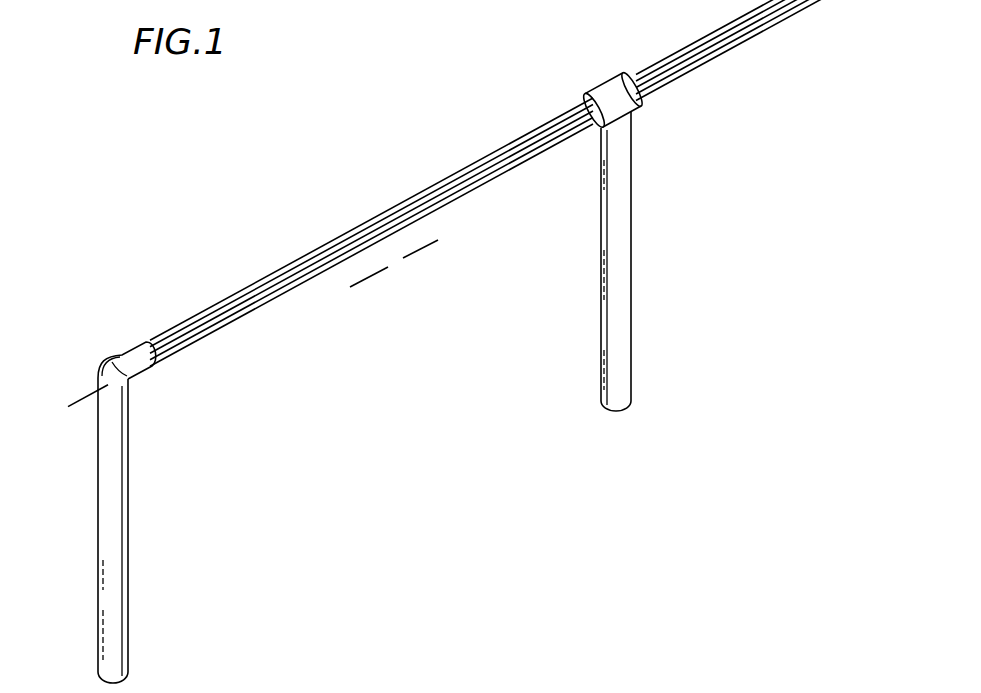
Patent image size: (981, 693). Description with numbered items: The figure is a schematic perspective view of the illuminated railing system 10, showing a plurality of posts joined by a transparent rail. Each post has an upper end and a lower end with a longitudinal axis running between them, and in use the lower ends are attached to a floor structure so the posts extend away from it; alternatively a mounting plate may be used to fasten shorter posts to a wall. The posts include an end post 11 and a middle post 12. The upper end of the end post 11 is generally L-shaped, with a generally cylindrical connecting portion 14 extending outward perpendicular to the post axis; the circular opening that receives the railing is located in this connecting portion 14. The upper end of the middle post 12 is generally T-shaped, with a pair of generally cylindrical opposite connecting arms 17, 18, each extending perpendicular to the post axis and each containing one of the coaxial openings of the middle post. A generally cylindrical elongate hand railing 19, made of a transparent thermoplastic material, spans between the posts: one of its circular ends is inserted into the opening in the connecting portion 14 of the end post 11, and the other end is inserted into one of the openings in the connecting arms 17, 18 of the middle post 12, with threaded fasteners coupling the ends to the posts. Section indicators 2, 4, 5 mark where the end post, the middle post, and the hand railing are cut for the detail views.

The illuminated railing system 10 is at (131, 228).
The end post 11 is at (119, 547).
The middle post 12 is at (620, 328).
The connecting portion 14 is at (127, 362).
The connecting arm 17 is at (592, 100).
The connecting arm 18 is at (624, 86).
The hand railing 19 is at (332, 241).
The flat face 2 is at (201, 342).
The flat face of bar 4 is at (680, 85).
The groove lines 5 is at (440, 249).